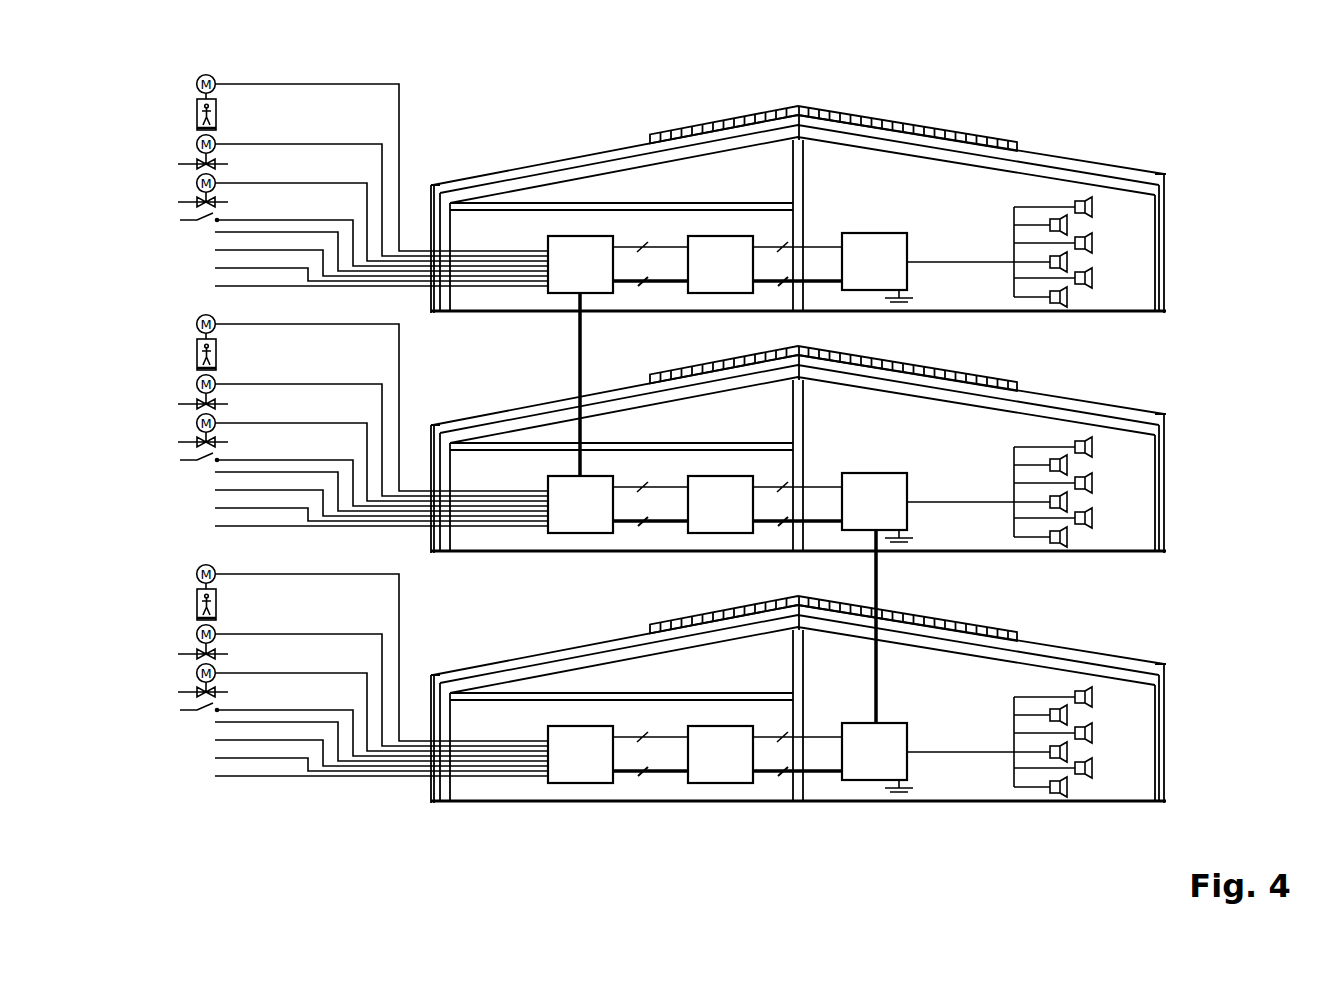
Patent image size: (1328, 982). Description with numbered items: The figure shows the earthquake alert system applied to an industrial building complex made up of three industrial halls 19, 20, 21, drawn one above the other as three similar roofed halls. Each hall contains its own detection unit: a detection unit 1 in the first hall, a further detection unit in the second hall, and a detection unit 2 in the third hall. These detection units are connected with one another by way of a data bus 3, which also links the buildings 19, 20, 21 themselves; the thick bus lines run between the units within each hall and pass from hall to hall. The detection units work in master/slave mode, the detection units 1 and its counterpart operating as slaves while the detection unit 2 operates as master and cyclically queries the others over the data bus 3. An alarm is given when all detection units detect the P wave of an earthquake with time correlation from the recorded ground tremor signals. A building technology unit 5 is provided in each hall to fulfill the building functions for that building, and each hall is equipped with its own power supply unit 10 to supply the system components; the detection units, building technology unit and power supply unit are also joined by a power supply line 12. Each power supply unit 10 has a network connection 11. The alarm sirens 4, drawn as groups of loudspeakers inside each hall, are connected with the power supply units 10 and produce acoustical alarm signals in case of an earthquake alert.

The detection unit 1 is at (713, 276).
The detection unit 2 is at (713, 766).
The data bus 3 is at (780, 783).
The alarm sirens 4 is at (1013, 250).
The building technology unit 5 is at (573, 276).
The power supply unit 10 is at (861, 273).
The network connection 11 is at (913, 300).
The power supply line 12 is at (774, 244).
The industrial hall 19 is at (1057, 160).
The industrial hall 20 is at (1057, 400).
The industrial hall 21 is at (1058, 650).